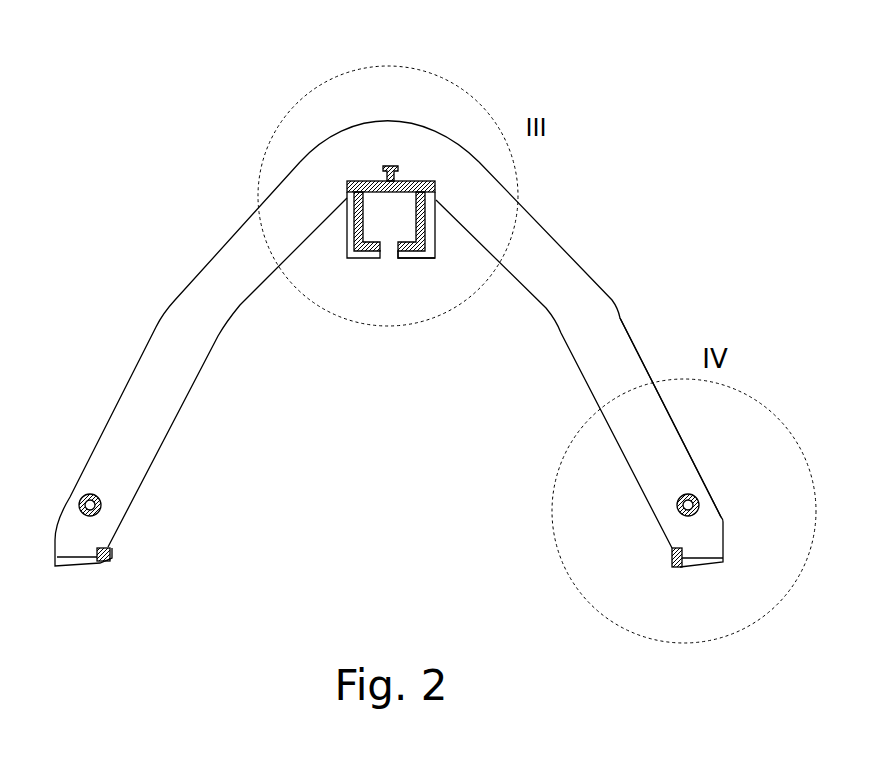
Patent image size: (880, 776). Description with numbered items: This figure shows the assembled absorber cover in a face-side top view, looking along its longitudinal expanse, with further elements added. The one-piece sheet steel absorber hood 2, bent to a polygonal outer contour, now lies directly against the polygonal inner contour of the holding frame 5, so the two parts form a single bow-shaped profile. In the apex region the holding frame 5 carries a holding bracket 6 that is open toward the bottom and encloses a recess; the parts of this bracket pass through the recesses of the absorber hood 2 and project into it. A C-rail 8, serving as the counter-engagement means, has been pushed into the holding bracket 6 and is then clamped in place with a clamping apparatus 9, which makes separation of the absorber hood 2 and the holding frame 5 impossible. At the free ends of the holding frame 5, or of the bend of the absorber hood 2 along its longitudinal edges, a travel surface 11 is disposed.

The absorber hood 2 is at (165, 436).
The holding frame 5 is at (696, 292).
The holding bracket 6 is at (424, 262).
The C-rail 8 is at (366, 260).
The clamping apparatus 9 is at (366, 182).
The travel surface 11 is at (672, 552).